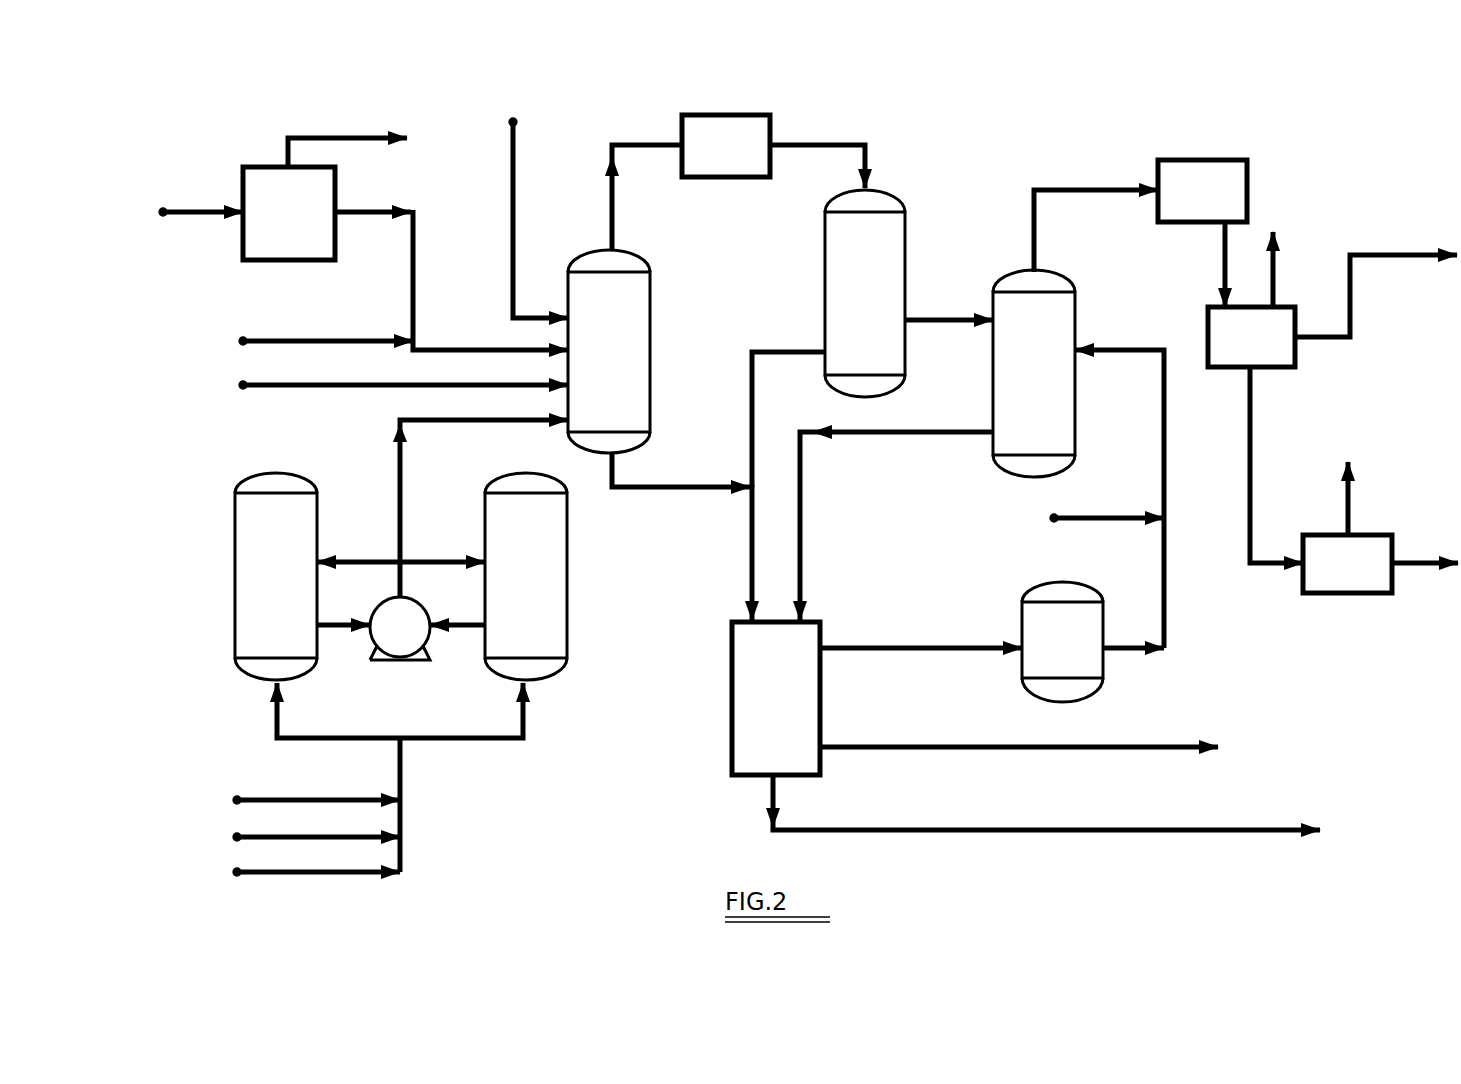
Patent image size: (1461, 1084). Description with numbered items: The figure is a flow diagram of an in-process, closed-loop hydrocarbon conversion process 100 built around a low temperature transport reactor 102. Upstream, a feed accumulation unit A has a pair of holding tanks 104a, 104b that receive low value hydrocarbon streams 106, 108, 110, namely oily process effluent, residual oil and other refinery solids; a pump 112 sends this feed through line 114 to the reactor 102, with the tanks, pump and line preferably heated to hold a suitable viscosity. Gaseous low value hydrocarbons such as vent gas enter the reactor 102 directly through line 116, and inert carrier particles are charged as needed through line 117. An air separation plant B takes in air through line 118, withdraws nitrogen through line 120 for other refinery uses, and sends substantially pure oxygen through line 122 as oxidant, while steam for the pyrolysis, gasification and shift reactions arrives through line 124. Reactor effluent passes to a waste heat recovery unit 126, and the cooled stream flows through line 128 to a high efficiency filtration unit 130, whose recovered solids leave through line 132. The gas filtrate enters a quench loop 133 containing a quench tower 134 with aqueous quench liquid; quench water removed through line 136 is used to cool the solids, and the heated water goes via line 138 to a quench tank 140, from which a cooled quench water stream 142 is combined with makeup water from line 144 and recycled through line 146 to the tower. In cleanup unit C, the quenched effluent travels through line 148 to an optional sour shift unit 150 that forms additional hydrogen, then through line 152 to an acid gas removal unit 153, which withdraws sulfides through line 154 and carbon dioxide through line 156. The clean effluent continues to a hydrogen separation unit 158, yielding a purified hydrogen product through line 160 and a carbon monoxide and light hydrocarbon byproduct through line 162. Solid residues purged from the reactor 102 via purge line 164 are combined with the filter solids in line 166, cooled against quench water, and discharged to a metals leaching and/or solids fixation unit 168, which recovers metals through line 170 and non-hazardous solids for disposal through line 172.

The hydrocarbon conversion process 100 is at (258, 896).
The low temperature transport reactor 102 is at (620, 318).
The holding tank 104a is at (258, 583).
The holding tank 104b is at (540, 614).
The hydrocarbon feed stream 106 is at (262, 798).
The hydrocarbon feed stream 108 is at (258, 835).
The hydrocarbon feed stream 110 is at (272, 870).
The pump 112 is at (400, 655).
The line 114 is at (440, 423).
The line 116 is at (275, 385).
The line 117 is at (513, 220).
The line 118 is at (193, 213).
The line 120 is at (365, 145).
The line 122 is at (413, 270).
The line 124 is at (277, 340).
The waste heat recovery unit 126 is at (700, 132).
The line 128 is at (803, 142).
The high efficiency filtration unit 130 is at (891, 233).
The line 132 is at (757, 413).
The quench loop 133 is at (1190, 620).
The quench tower 134 is at (1015, 368).
The line 136 is at (803, 568).
The line 138 is at (855, 647).
The quench tank 140 is at (1045, 595).
The cooled quench water stream 142 is at (1168, 640).
The line 144 is at (1065, 518).
The line 146 is at (1166, 476).
The line 148 is at (1090, 190).
The sour shift unit 150 is at (1170, 222).
The line 152 is at (1225, 253).
The acid gas removal unit 153 is at (1300, 357).
The line 154 is at (1275, 258).
The line 156 is at (1350, 300).
The hydrogen separation unit 158 is at (1360, 596).
The line 160 is at (1415, 563).
The line 162 is at (1350, 487).
The purge line 164 is at (697, 490).
The line 166 is at (748, 568).
The metals leaching and/or solids fixation unit 168 is at (753, 720).
The line 170 is at (875, 746).
The line 172 is at (1002, 830).
The feed accumulation unit A is at (217, 640).
The air separation plant B is at (265, 167).
The cleanup unit C is at (1092, 152).